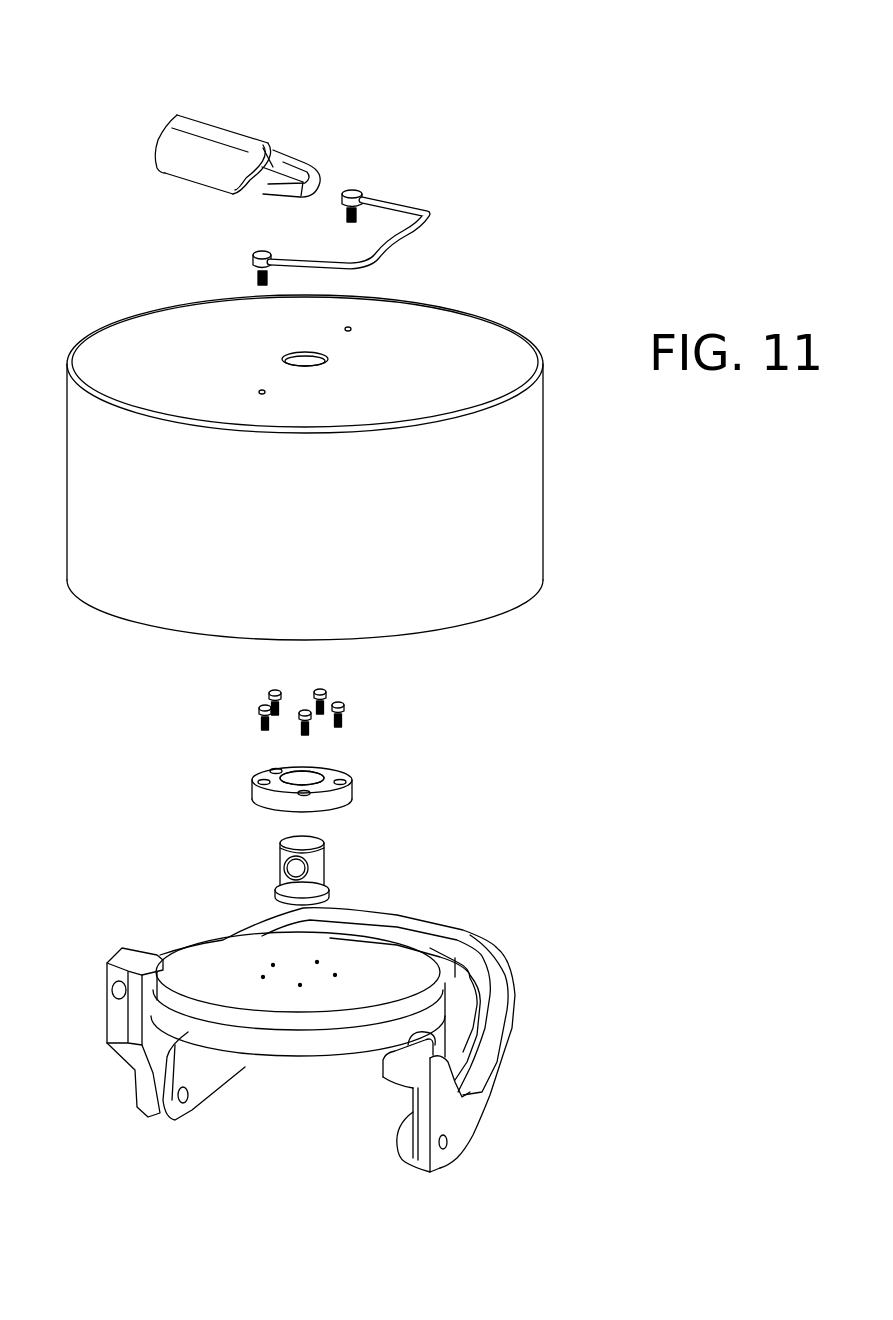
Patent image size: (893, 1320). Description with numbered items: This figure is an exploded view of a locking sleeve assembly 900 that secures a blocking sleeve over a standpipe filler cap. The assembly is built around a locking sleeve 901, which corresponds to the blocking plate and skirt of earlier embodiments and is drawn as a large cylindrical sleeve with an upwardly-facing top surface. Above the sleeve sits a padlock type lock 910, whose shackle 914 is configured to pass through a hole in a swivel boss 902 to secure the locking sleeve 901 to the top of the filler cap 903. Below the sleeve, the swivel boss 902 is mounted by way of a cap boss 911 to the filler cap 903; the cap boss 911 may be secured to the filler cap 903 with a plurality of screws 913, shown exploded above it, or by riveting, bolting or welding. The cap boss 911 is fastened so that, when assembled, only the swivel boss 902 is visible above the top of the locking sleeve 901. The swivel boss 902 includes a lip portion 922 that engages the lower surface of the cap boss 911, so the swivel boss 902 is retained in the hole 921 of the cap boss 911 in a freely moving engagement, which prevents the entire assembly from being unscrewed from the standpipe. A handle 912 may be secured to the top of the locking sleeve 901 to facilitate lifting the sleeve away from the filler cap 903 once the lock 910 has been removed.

The locking sleeve assembly 900 is at (661, 631).
The locking sleeve 901 is at (163, 320).
The swivel boss 902 is at (328, 860).
The filler cap 903 is at (405, 968).
The padlock type lock 910 is at (213, 133).
The cap boss 911 is at (353, 777).
The handle 912 is at (433, 207).
The screws 913 is at (345, 703).
The shackle 914 is at (312, 168).
The hole 921 is at (280, 785).
The lip portion 922 is at (275, 890).